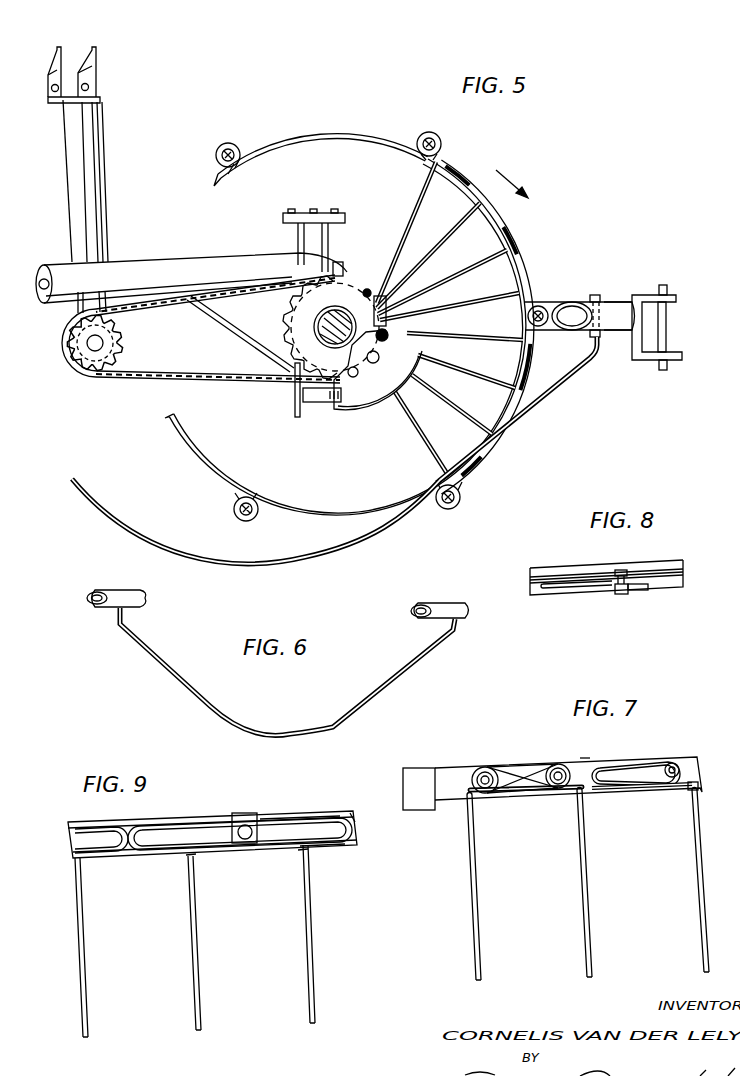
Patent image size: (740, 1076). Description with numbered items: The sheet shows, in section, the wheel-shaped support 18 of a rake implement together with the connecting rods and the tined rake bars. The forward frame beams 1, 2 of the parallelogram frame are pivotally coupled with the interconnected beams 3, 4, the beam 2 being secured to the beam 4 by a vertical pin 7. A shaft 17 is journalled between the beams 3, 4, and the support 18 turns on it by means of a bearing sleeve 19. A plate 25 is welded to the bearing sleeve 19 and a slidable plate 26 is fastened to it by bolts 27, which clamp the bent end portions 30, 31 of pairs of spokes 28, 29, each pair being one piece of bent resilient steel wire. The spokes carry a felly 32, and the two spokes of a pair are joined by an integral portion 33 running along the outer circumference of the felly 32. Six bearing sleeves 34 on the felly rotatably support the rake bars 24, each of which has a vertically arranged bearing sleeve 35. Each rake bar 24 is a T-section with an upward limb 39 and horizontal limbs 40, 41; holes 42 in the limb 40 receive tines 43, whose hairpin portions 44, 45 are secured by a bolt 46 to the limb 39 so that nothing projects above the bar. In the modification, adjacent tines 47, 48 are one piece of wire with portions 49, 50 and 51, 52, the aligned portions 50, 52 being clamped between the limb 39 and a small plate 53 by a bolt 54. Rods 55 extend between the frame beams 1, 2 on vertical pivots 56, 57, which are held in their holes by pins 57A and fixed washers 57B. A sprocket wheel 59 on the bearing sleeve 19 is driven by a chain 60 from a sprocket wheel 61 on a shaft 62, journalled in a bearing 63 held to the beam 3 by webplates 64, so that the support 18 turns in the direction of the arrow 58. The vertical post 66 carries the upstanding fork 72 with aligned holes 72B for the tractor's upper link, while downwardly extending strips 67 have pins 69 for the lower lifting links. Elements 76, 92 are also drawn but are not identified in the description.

In FIG. 6, the frame beam 1 is at (146, 605).
In FIG. 5, the frame beam 2 is at (612, 301).
In FIG. 6, the frame beam 2 is at (420, 619).
In FIG. 5, the beam 3 is at (163, 261).
In FIG. 5, the beam 4 is at (552, 302).
In FIG. 5, the vertical pin 7 is at (662, 286).
In FIG. 5, the shaft 17 is at (330, 316).
In FIG. 5, the support 18 is at (341, 135).
In FIG. 5, the bearing sleeve 19 is at (322, 338).
In FIG. 8, the rake bar 24 is at (680, 590).
In FIG. 7, the rake bar 24 is at (450, 763).
In FIG. 9, the rake bar 24 is at (116, 875).
In FIG. 5, the plate 25 is at (370, 414).
In FIG. 5, the plate 26 is at (390, 288).
In FIG. 5, the bolt 27 is at (359, 374).
In FIG. 5, the spoke 28 is at (404, 229).
In FIG. 5, the spoke 29 is at (433, 251).
In FIG. 5, the bent end portion 30 is at (367, 356).
In FIG. 5, the bent end portion 31 is at (388, 339).
In FIG. 5, the felly 32 is at (494, 221).
In FIG. 5, the integral portion 33 is at (523, 268).
In FIG. 5, the bearing sleeve 34 is at (440, 140).
In FIG. 7, the bearing sleeve 35 is at (410, 768).
In FIG. 7, the limb 39 is at (579, 762).
In FIG. 9, the limb 39 is at (347, 812).
In FIG. 8, the limb 40 is at (535, 600).
In FIG. 7, the limb 40 is at (534, 801).
In FIG. 9, the limb 40 is at (357, 848).
In FIG. 8, the limb 41 is at (560, 568).
In FIG. 8, the hole 42 is at (638, 594).
In FIG. 7, the hole 42 is at (690, 796).
In FIG. 9, the hole 42 is at (195, 861).
In FIG. 7, the tine 43 is at (476, 919).
In FIG. 7, the portion 44 is at (628, 793).
In FIG. 8, the portion 45 is at (572, 594).
In FIG. 7, the portion 45 is at (628, 762).
In FIG. 8, the bolt 46 is at (620, 598).
In FIG. 7, the bolt 46 is at (552, 766).
In FIG. 9, the tine 47 is at (200, 1005).
In FIG. 9, the tine 48 is at (304, 990).
In FIG. 9, the portion 49 is at (165, 861).
In FIG. 9, the portion 50 is at (170, 822).
In FIG. 9, the portion 51 is at (322, 851).
In FIG. 9, the portion 52 is at (302, 816).
In FIG. 9, the small plate 53 is at (258, 830).
In FIG. 9, the bolt 54 is at (237, 833).
In FIG. 5, the rod 55 is at (176, 543).
In FIG. 6, the rod 55 is at (288, 731).
In FIG. 6, the vertical pivot 56 is at (116, 590).
In FIG. 5, the vertical pivot 57 is at (593, 295).
In FIG. 6, the vertical pivot 57 is at (455, 603).
In FIG. 5, the pin 57A is at (600, 294).
In FIG. 5, the fixed washer 57B is at (600, 341).
In FIG. 5, the arrow 58 is at (504, 172).
In FIG. 5, the sprocket wheel 59 is at (282, 334).
In FIG. 5, the chain 60 is at (207, 386).
In FIG. 5, the sprocket wheel 61 is at (127, 346).
In FIG. 5, the shaft 62 is at (104, 341).
In FIG. 5, the bearing 63 is at (88, 380).
In FIG. 5, the webplate 64 is at (92, 294).
In FIG. 5, the vertical post 66 is at (99, 178).
In FIG. 5, the strip 67 is at (294, 411).
In FIG. 5, the pin 69 is at (322, 403).
In FIG. 5, the fork 72 is at (78, 50).
In FIG. 5, the hole 72B is at (62, 82).
In FIG. 5, the bearing block 76 is at (330, 210).
In FIG. 5, the rod 92 is at (84, 98).